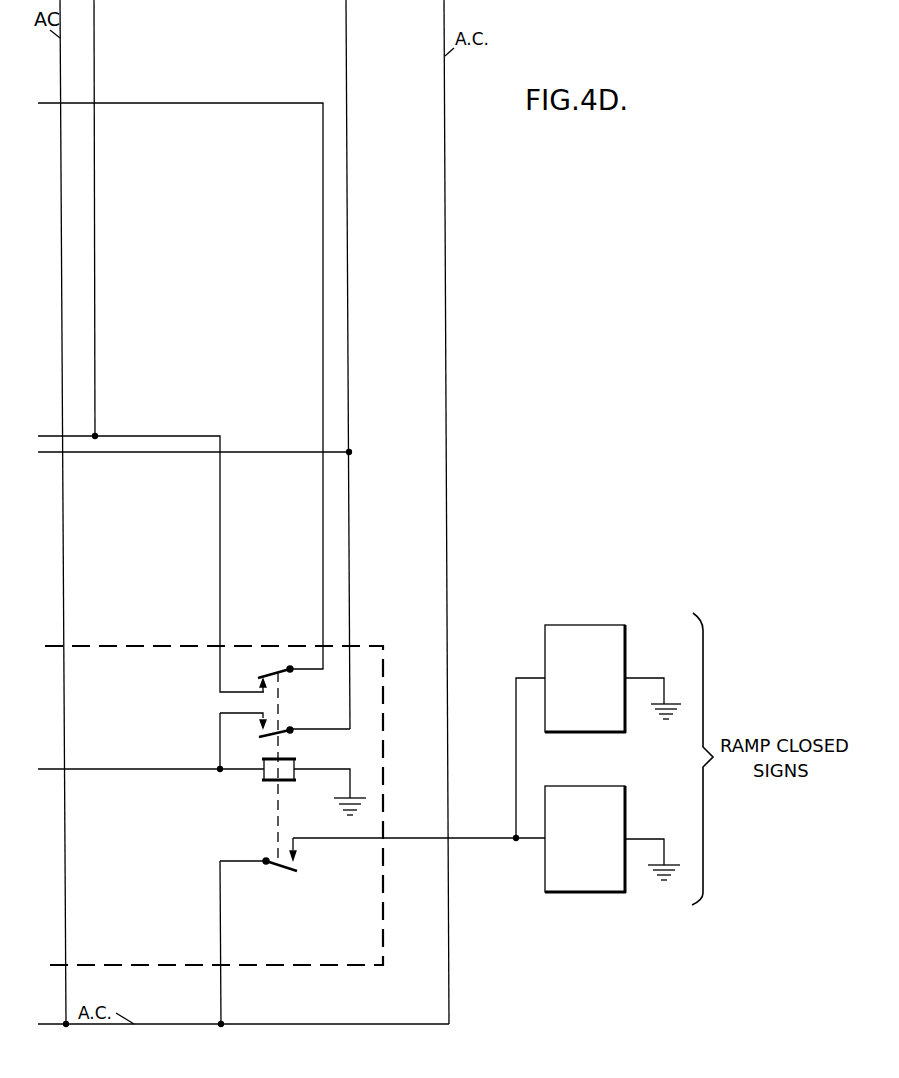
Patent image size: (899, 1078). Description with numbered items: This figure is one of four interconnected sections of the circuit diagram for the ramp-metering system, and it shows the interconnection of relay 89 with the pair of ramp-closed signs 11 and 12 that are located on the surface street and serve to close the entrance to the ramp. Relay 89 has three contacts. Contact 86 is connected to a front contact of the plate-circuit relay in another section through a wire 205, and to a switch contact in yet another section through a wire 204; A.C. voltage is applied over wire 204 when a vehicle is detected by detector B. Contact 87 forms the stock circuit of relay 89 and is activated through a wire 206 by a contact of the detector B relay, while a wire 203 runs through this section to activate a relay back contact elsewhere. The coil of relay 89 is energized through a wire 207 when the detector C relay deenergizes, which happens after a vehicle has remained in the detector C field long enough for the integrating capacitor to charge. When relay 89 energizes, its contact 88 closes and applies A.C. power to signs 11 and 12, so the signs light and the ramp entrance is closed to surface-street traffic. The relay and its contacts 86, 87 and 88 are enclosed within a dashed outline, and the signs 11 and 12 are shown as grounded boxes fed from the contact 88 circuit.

The sign 11 is at (630, 647).
The sign 12 is at (629, 808).
The relay contact 86 is at (280, 673).
The relay contact 87 is at (283, 735).
The relay contact 88 is at (285, 871).
The relay 89 is at (264, 758).
The wire 203 is at (347, 70).
The wire 204 is at (95, 38).
The wire 205 is at (168, 103).
The wire 206 is at (142, 452).
The wire 207 is at (136, 769).